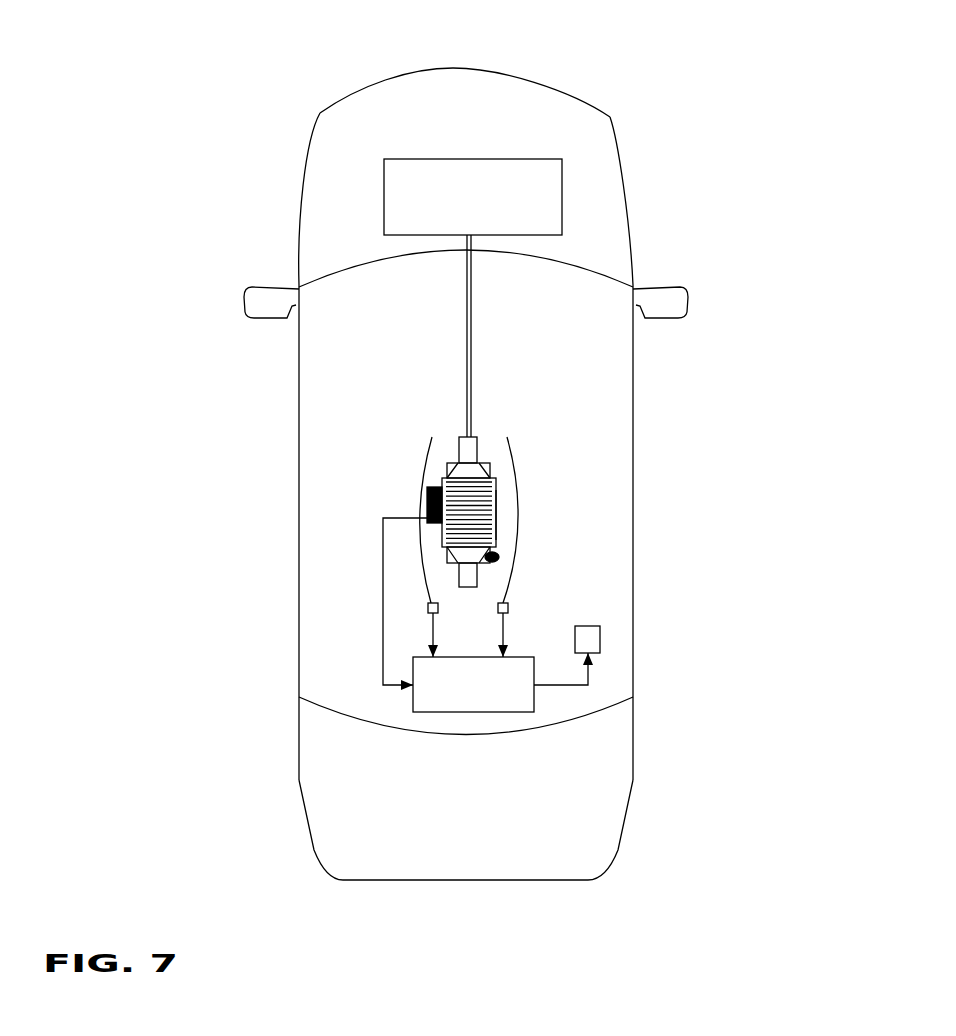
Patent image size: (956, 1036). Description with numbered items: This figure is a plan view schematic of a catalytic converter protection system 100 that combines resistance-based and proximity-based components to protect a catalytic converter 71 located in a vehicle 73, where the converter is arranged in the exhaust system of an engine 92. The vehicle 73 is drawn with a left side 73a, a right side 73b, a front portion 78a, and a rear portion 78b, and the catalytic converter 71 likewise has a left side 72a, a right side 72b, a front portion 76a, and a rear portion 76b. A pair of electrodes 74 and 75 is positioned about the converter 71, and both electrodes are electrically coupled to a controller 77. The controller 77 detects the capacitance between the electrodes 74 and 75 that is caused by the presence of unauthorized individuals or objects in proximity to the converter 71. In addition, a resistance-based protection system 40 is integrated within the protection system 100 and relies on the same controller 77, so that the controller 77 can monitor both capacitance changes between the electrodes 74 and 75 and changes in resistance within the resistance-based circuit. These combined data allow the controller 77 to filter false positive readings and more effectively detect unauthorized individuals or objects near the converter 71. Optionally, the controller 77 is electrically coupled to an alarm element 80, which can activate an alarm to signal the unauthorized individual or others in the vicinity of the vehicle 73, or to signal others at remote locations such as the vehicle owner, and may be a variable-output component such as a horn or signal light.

The catalytic converter protection system 100 is at (482, 497).
The vehicle 73 is at (627, 195).
The left side 73a is at (296, 332).
The right side 73b is at (634, 375).
The front portion 78a is at (515, 73).
The rear portion 78b is at (515, 880).
The engine 92 is at (441, 159).
The front portion 76a is at (459, 449).
The rear portion 76b is at (454, 572).
The electrode 74 is at (427, 487).
The left side 72a is at (442, 537).
The right side 72b is at (497, 525).
The resistance-based protection system 40 is at (426, 508).
The catalytic converter 71 is at (497, 559).
The electrode 75 is at (522, 488).
The controller 77 is at (465, 702).
The alarm element 80 is at (588, 640).